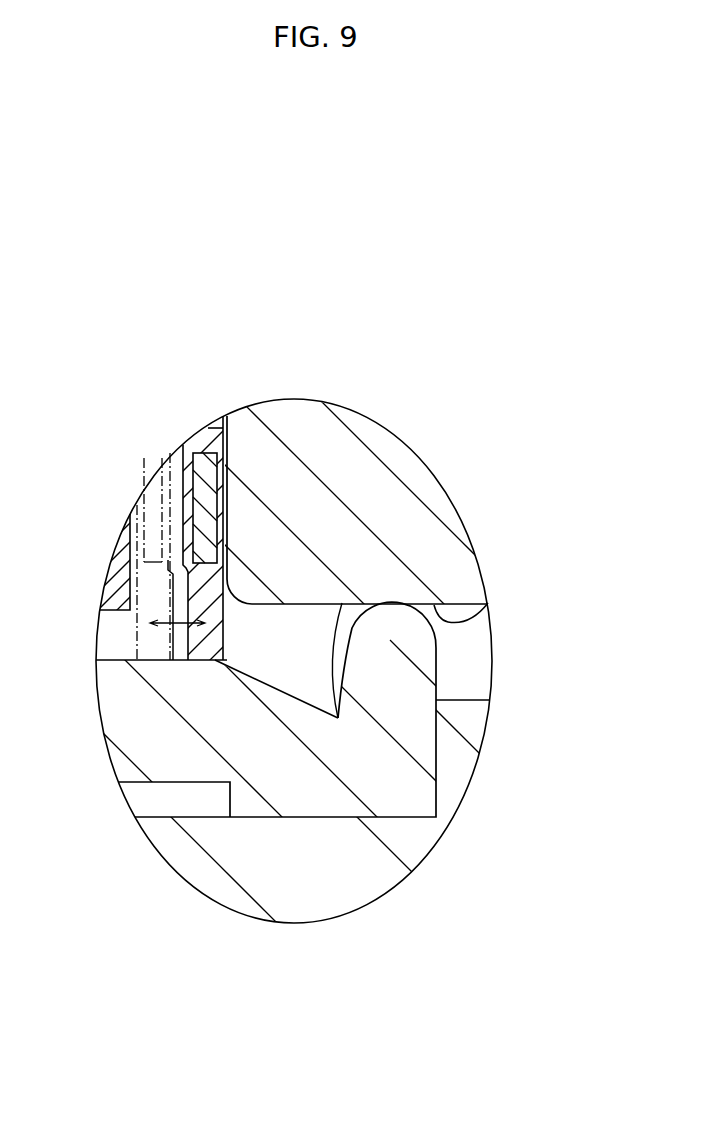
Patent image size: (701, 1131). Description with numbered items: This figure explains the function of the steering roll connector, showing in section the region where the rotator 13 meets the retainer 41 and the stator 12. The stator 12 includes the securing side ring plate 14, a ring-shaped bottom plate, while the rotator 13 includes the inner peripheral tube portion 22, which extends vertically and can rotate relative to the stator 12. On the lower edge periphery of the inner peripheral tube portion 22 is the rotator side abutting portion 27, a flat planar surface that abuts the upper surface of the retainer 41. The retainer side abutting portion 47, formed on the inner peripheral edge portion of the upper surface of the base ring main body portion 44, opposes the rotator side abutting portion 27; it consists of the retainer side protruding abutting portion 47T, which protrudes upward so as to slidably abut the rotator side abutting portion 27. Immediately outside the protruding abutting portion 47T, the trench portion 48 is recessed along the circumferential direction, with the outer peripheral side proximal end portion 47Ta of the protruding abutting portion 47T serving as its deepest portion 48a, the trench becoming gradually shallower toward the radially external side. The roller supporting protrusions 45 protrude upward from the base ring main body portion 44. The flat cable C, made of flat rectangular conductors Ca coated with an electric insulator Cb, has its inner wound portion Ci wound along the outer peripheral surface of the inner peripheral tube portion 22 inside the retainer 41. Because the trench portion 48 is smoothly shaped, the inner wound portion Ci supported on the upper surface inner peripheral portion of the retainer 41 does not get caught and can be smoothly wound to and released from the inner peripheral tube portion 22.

The stator 12 is at (468, 696).
The rotator 13 is at (245, 520).
The securing side ring plate 14 is at (193, 867).
The inner peripheral tube portion 22 is at (207, 428).
The rotator side abutting portion 27 is at (488, 603).
The retainer 41 is at (139, 791).
The base ring main body portion 44 is at (295, 614).
The roller supporting protrusions 45 is at (152, 620).
The retainer side abutting portion 47 is at (392, 603).
The retainer side protruding abutting portion 47T is at (454, 556).
The outer peripheral side proximal end portion 47Ta is at (342, 603).
The trench portion 48 is at (304, 652).
The deepest portion 48a is at (380, 531).
The flat rectangular conductors Ca is at (193, 498).
The electric insulator Cb is at (185, 600).
The inner wound portion Ci is at (103, 529).
The flat cable C is at (187, 457).